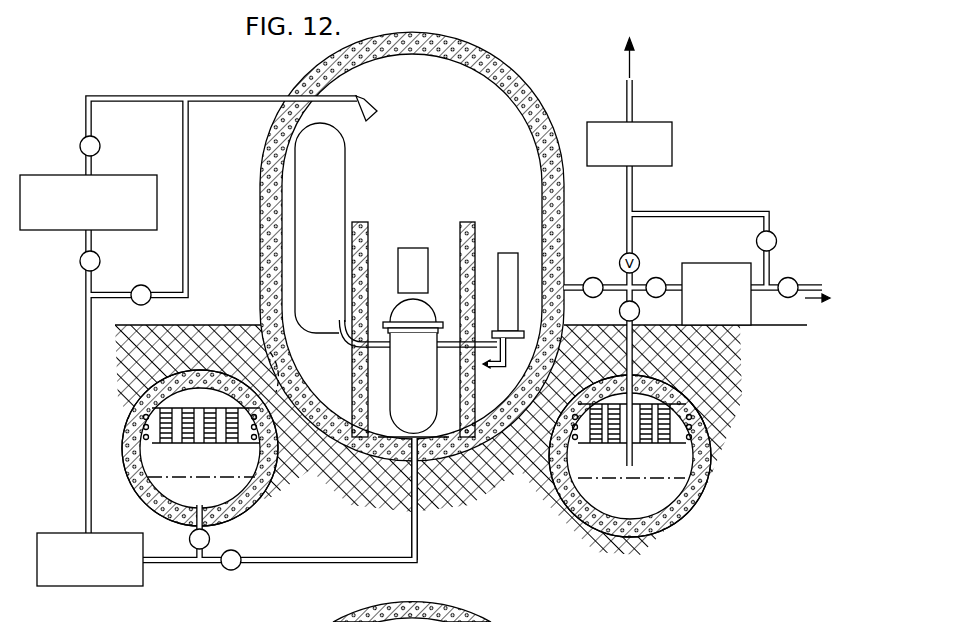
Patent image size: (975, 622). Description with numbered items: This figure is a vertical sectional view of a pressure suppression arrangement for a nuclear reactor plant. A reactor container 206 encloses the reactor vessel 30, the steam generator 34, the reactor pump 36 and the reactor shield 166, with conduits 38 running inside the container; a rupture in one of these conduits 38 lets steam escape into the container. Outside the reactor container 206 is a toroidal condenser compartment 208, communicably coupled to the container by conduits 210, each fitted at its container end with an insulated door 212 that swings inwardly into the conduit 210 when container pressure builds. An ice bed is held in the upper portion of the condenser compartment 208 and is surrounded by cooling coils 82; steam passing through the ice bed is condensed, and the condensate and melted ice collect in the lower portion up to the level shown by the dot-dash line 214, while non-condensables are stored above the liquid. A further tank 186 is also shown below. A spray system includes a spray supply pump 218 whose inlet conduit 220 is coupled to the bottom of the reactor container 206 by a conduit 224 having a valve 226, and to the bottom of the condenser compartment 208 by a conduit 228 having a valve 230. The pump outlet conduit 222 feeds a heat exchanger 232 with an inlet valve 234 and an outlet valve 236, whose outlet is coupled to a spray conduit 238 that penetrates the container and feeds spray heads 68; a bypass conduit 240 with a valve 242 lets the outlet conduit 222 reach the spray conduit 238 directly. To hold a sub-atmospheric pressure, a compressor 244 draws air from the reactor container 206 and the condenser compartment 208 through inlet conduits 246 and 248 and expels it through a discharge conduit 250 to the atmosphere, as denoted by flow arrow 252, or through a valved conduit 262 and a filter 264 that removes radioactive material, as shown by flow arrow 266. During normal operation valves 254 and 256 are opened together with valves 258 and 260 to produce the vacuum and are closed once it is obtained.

The reactor container 206 is at (485, 58).
The conduits 210 is at (244, 343).
The insulated door 212 is at (288, 352).
The dot-dash line 214 is at (700, 495).
The cooling coils 82 is at (695, 427).
The condenser compartment 208 is at (680, 460).
The tank 186 is at (500, 621).
The spray conduit 238 is at (260, 95).
The bypass conduit 240 is at (190, 197).
The outlet conduit 222 is at (86, 464).
The inlet conduit 220 is at (175, 565).
The conduit 224 is at (418, 531).
The conduit 228 is at (205, 527).
The flow arrow 266 is at (633, 63).
The inlet conduit 248 is at (622, 335).
The inlet conduit 246 is at (574, 291).
The valved conduit 262 is at (740, 212).
The flow arrow 252 is at (810, 300).
The conduits 38 is at (345, 362).
The reactor pump 36 is at (510, 372).
The steam generator 34 is at (340, 181).
The spray heads 68 is at (377, 110).
The reactor shield 166 is at (470, 242).
The reactor vessel 30 is at (427, 393).
The heat exchanger 232 is at (60, 173).
The spray supply pump 218 is at (115, 583).
The filter 264 is at (660, 121).
The compressor 244 is at (720, 258).
The outlet valve 236 is at (100, 146).
The inlet valve 234 is at (101, 259).
The valve 242 is at (150, 302).
The valve 230 is at (190, 541).
The valve 226 is at (237, 568).
The valve 254 is at (605, 275).
The valve 258 is at (656, 278).
The valve 256 is at (636, 303).
The valve 260 is at (775, 243).
The discharge conduit 250 is at (790, 280).